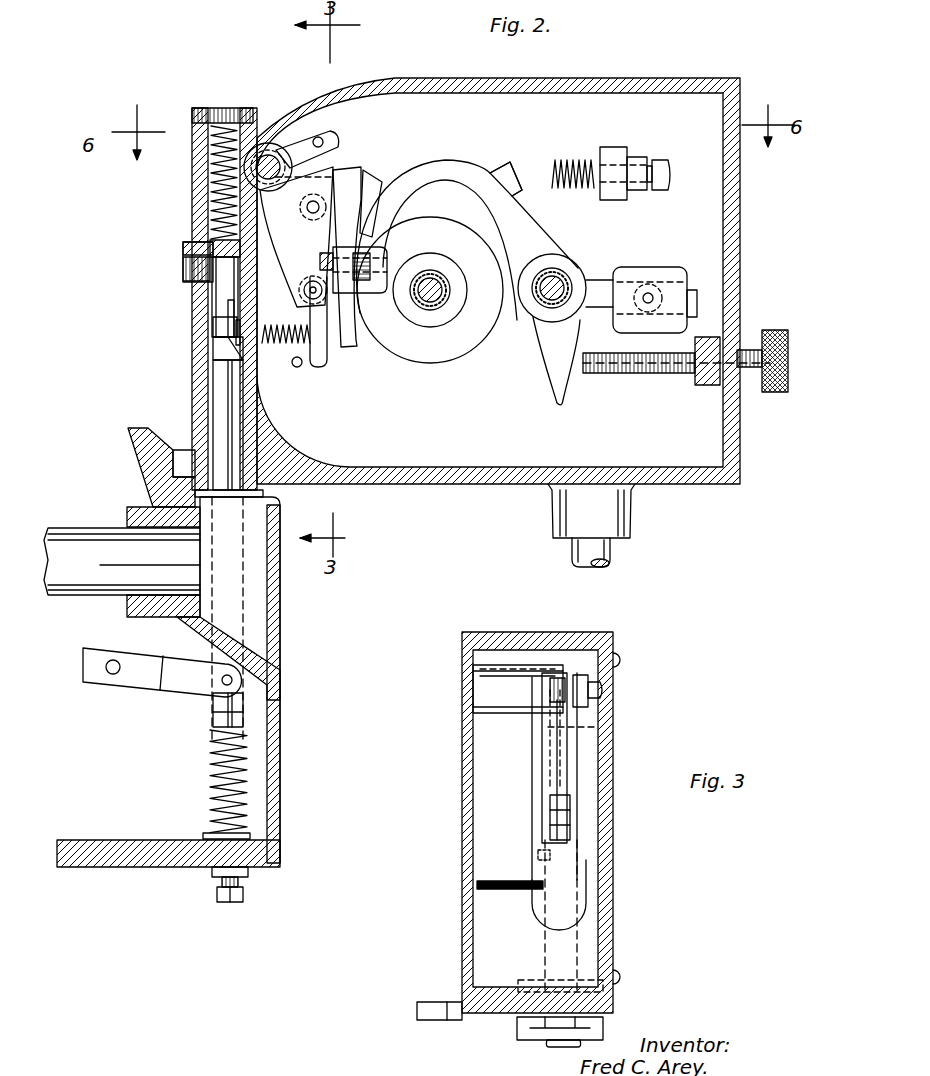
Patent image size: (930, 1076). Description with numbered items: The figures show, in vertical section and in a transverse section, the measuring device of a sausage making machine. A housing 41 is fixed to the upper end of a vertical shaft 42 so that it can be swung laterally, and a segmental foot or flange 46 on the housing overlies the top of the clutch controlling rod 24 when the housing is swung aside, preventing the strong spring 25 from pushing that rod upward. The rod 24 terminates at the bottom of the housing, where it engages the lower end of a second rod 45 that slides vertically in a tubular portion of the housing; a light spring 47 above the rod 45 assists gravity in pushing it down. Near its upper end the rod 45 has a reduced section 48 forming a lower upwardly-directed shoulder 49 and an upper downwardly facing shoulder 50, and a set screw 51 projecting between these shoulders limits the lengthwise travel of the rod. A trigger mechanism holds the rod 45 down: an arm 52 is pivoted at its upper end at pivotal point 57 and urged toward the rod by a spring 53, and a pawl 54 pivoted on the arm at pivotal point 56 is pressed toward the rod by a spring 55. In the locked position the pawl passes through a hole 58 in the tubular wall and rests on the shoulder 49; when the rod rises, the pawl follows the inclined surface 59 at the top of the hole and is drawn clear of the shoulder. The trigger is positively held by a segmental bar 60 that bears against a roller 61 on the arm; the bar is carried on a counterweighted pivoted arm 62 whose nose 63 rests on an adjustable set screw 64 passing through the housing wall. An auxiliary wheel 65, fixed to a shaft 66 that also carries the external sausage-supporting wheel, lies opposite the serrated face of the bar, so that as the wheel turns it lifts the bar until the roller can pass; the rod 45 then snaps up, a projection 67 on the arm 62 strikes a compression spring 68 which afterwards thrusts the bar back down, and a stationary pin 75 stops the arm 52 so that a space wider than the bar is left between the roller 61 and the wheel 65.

In FIG. 2, the vertically-slidable rod 24 is at (247, 713).
In FIG. 3, the vertically-slidable rod 24 is at (553, 1019).
In FIG. 2, the spring 25 is at (247, 762).
In FIG. 2, the housing 41 is at (740, 432).
In FIG. 3, the housing 41 is at (613, 880).
In FIG. 2, the shaft 42 is at (610, 553).
In FIG. 2, the second rod 45 is at (225, 415).
In FIG. 3, the second rod 45 is at (577, 943).
In FIG. 3, the segmental foot or flange 46 is at (427, 1002).
In FIG. 2, the light spring 47 is at (210, 184).
In FIG. 2, the reduced-diameter section 48 is at (213, 320).
In FIG. 2, the lower upwardly-directed shoulder 49 is at (226, 345).
In FIG. 2, the upper downwardly facing shoulder 50 is at (208, 248).
In FIG. 2, the set screw 51 is at (183, 266).
In FIG. 2, the arm 52 is at (325, 150).
In FIG. 3, the arm 52 is at (570, 767).
In FIG. 2, the spring 53 is at (325, 138).
In FIG. 3, the spring 53 is at (587, 688).
In FIG. 2, the pawl 54 is at (272, 293).
In FIG. 3, the pawl 54 is at (557, 775).
In FIG. 2, the spring 55 is at (290, 346).
In FIG. 3, the spring 55 is at (543, 857).
In FIG. 2, the pivotal point of the pawl 56 is at (340, 172).
In FIG. 3, the pivotal point of the pawl 56 is at (607, 727).
In FIG. 2, the pivotal point of the arm 57 is at (273, 144).
In FIG. 3, the pivotal point of the arm 57 is at (592, 690).
In FIG. 2, the hole 58 is at (236, 345).
In FIG. 2, the inclined surface 59 is at (213, 305).
In FIG. 2, the bar 60 is at (352, 346).
In FIG. 2, the roller 61 is at (352, 300).
In FIG. 3, the roller 61 is at (560, 803).
In FIG. 2, the pivoted arm 62 is at (538, 233).
In FIG. 2, the nose 63 is at (557, 348).
In FIG. 2, the set screw 64 is at (660, 374).
In FIG. 2, the auxiliary wheel 65 is at (417, 350).
In FIG. 2, the shaft 66 is at (436, 275).
In FIG. 2, the projection 67 is at (520, 176).
In FIG. 2, the compression spring 68 is at (582, 162).
In FIG. 2, the stationary pin 75 is at (300, 367).
In FIG. 3, the stationary pin 75 is at (520, 889).